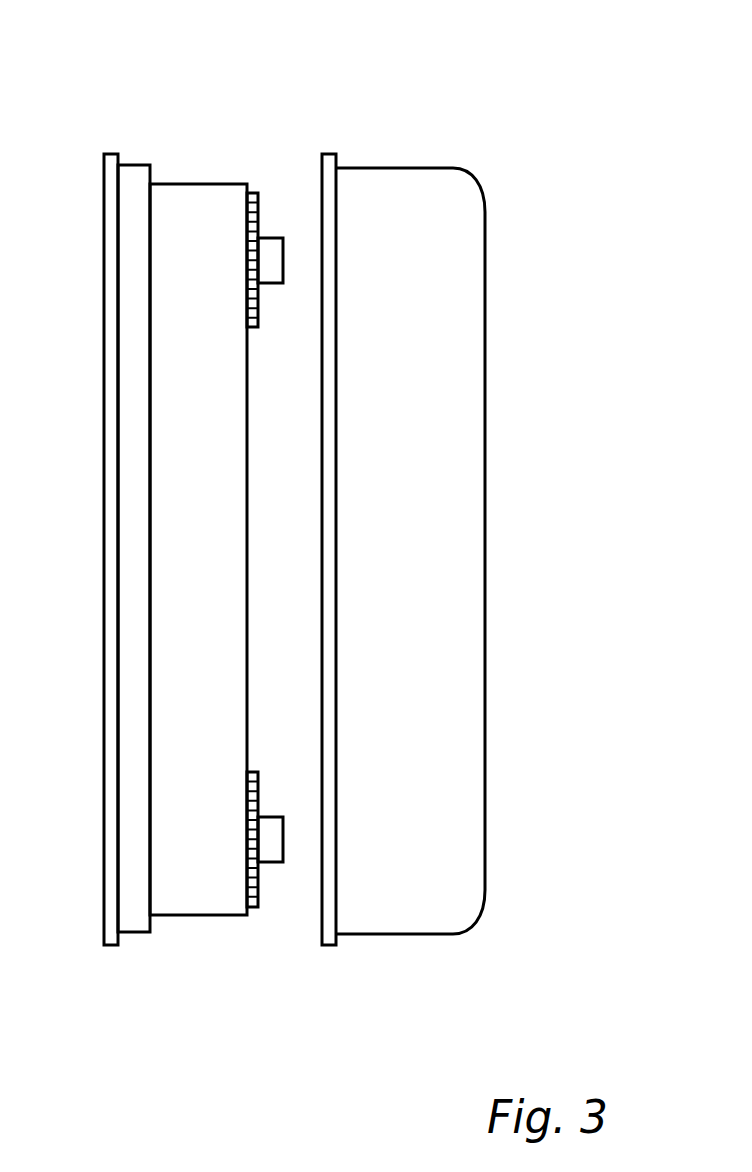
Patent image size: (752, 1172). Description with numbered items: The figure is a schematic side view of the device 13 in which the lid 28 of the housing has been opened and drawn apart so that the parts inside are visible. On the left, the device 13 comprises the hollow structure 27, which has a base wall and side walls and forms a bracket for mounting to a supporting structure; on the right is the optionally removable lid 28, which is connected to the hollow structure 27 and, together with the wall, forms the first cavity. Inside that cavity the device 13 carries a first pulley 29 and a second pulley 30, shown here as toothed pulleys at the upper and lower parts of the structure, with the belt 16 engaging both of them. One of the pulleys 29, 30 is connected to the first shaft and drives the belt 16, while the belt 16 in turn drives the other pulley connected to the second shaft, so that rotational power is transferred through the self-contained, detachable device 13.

The device 13 is at (384, 72).
The belt 16 is at (168, 537).
The structure 27 is at (127, 362).
The lid 28 is at (473, 364).
The first pulley 29 is at (256, 193).
The second pulley 30 is at (253, 907).